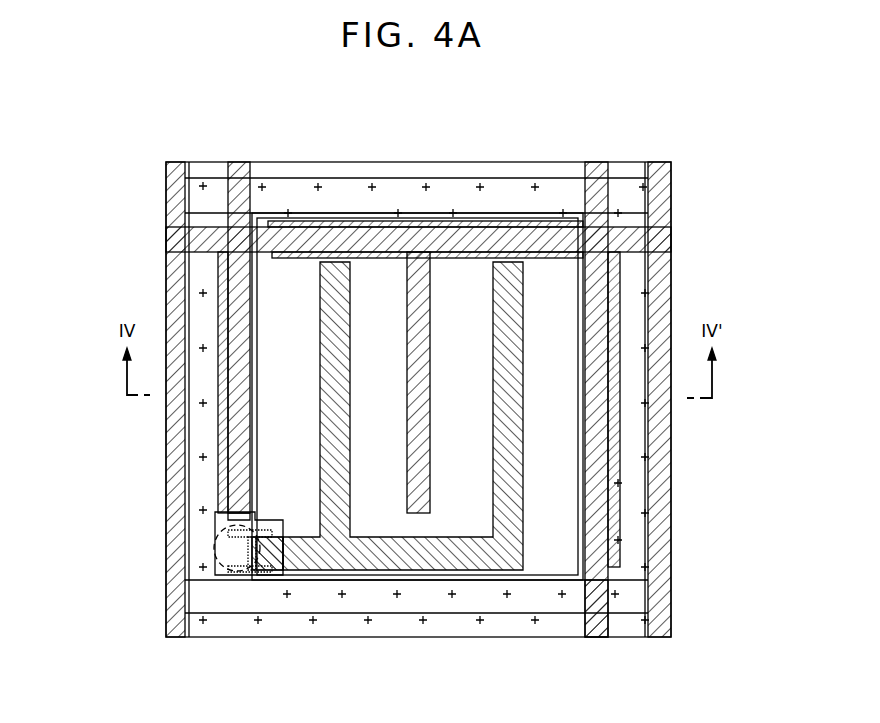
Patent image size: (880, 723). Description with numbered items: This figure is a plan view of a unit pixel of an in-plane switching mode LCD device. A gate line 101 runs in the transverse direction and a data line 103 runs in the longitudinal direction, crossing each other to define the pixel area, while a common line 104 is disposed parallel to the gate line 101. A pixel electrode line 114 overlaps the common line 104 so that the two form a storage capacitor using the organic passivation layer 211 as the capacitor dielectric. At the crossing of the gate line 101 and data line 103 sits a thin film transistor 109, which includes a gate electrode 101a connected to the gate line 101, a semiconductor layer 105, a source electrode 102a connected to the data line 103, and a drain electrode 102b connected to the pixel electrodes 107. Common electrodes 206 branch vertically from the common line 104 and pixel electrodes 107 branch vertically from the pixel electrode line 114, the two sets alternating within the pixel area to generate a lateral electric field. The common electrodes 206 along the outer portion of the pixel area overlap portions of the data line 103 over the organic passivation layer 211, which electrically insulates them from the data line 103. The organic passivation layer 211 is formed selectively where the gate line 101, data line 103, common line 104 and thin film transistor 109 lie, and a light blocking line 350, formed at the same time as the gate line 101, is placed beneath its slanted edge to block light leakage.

The gate line 101 is at (490, 600).
The gate electrode 101a is at (225, 505).
The source electrode 102a is at (228, 535).
The drain electrode 102b is at (270, 578).
The data line 103 is at (205, 625).
The common line 104 is at (175, 165).
The semiconductor layer 105 is at (250, 575).
The pixel electrodes 107 is at (337, 225).
The thin film transistor 109 is at (222, 572).
The pixel electrode line 114 is at (555, 225).
The common electrodes 206 is at (232, 270).
The organic passivation layer 211 is at (672, 470).
The light blocking line 350 is at (584, 596).